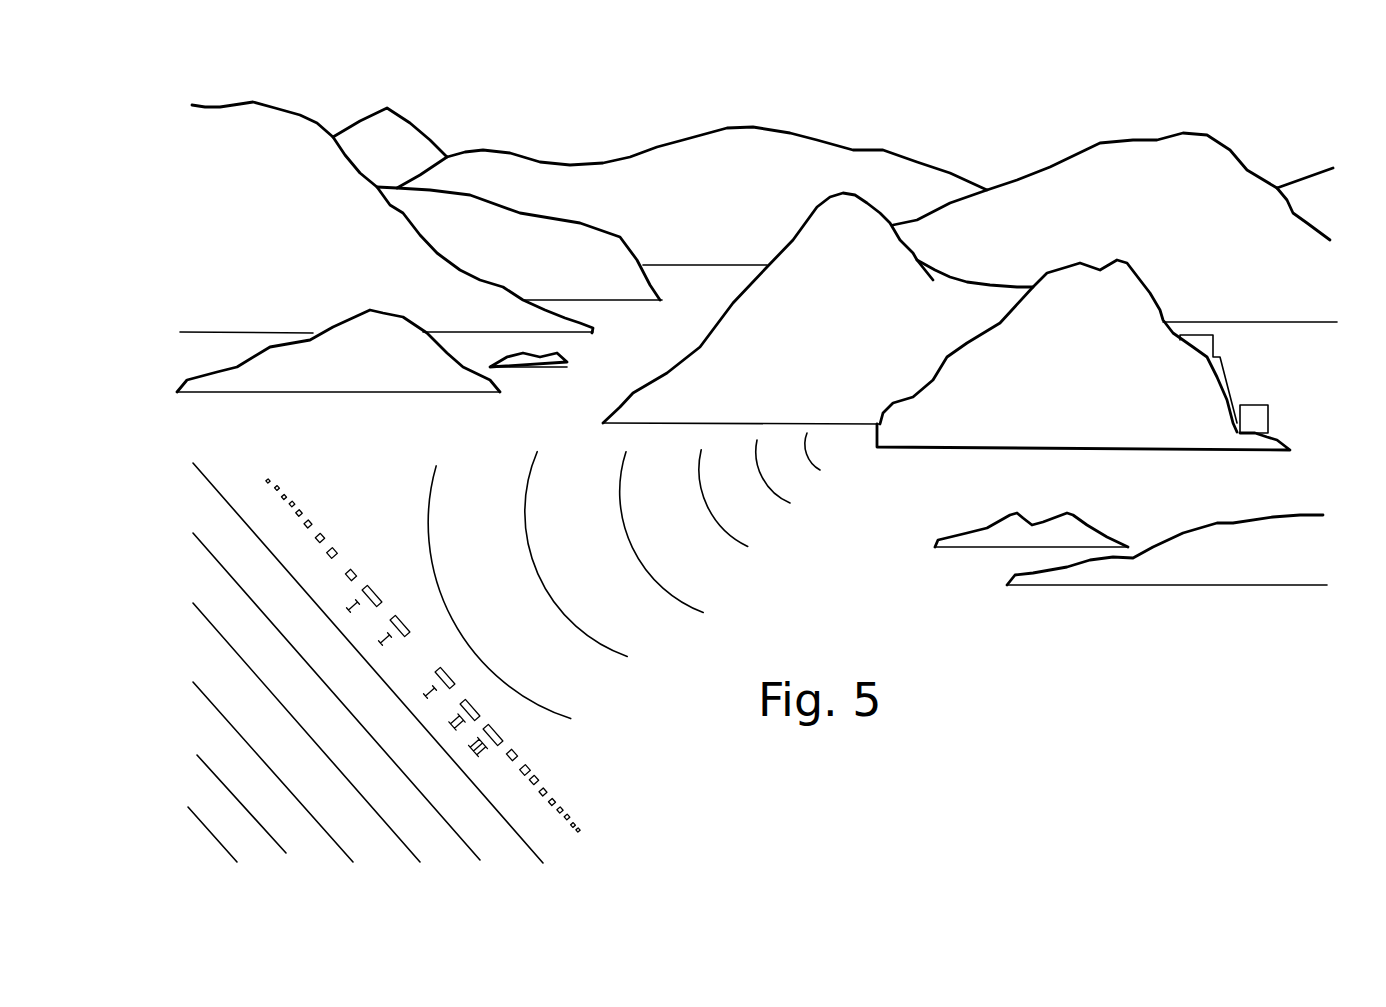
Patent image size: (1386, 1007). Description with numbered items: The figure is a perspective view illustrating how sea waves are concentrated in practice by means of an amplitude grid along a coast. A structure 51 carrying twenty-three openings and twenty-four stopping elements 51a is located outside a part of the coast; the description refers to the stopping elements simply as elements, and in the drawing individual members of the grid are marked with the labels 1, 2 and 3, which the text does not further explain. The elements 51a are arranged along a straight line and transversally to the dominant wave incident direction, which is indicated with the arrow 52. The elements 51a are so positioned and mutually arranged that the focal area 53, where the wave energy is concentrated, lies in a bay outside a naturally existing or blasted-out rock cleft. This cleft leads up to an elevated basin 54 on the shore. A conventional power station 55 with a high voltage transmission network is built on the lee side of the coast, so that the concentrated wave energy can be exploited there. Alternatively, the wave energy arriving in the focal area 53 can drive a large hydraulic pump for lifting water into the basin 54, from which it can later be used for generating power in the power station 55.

The first type array element 1 is at (453, 670).
The second type array element 2 is at (478, 702).
The third type array element 3 is at (540, 743).
The structure 51 is at (502, 742).
The stopping elements 51a is at (377, 591).
The arrow 52 is at (228, 808).
The focal area 53 is at (873, 432).
The elevated basin 54 is at (1203, 347).
The power station 55 is at (1253, 422).